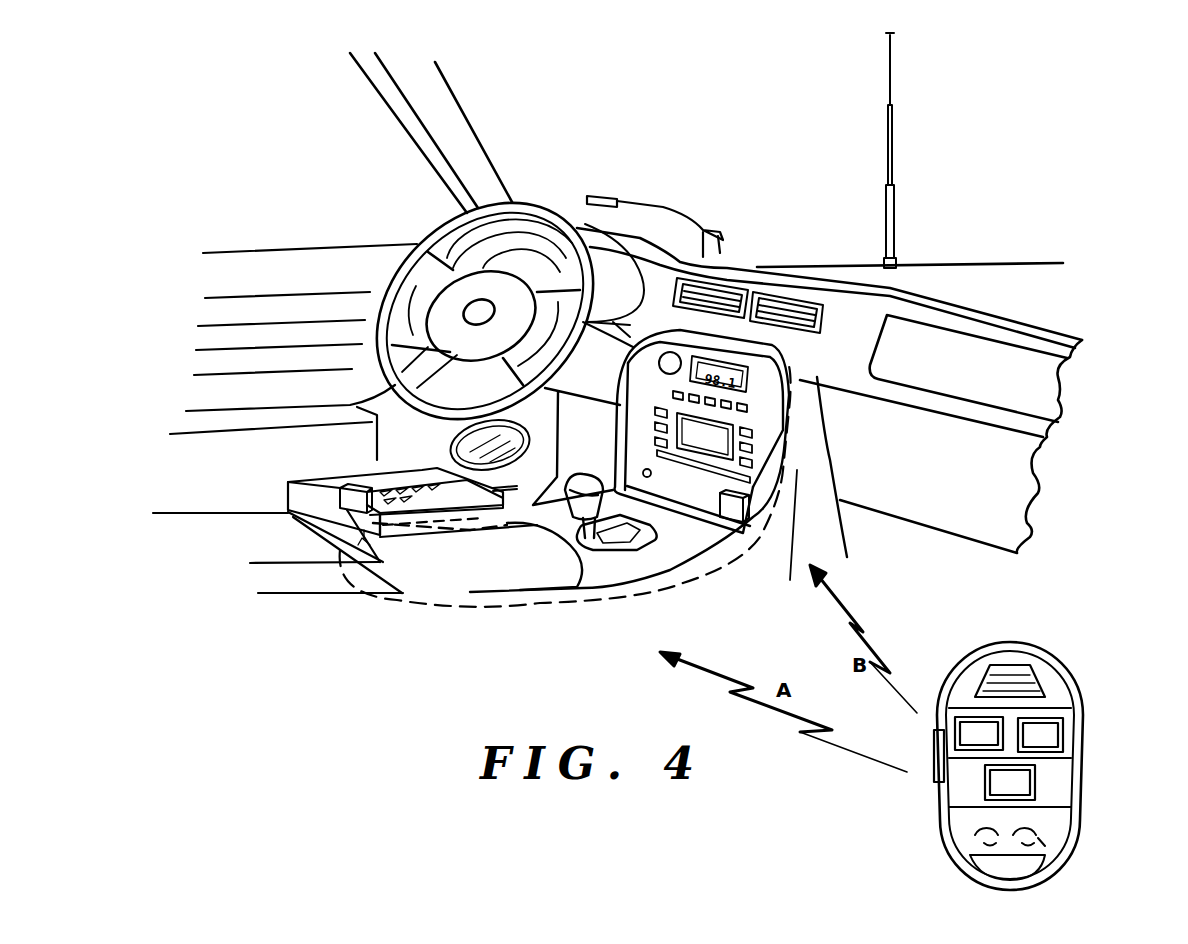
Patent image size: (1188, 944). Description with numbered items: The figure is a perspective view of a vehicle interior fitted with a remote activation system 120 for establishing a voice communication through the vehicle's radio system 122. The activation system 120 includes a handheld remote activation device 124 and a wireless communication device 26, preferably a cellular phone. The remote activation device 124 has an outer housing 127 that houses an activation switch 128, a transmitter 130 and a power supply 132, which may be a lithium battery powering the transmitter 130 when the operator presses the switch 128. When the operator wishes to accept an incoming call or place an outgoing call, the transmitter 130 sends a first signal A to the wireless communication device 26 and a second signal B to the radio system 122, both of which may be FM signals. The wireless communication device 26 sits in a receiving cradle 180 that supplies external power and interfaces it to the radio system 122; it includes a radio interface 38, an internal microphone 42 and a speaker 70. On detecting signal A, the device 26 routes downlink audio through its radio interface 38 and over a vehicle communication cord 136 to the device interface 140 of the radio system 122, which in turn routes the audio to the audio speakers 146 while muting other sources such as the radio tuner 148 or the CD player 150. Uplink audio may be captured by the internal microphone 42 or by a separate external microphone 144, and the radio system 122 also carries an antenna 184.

The wireless communication device 26 is at (440, 483).
The radio interface 38 is at (337, 597).
The internal microphone 42 is at (363, 490).
The speaker 70 is at (468, 477).
The remote activation system 120 is at (987, 230).
The radio system 122 is at (798, 447).
The remote activation device 124 is at (1031, 742).
The outer housing 127 is at (1080, 775).
The activation switch 128 is at (1010, 678).
The transmitter 130 is at (923, 777).
The power supply 132 is at (1073, 864).
The vehicle communication cord 136 is at (525, 615).
The device interface 140 is at (353, 593).
The external microphone 144 is at (663, 207).
The audio speakers 146 is at (455, 447).
The radio tuner 148 is at (658, 360).
The CD player 150 is at (733, 477).
The receiving cradle 180 is at (350, 507).
The antenna 184 is at (895, 124).